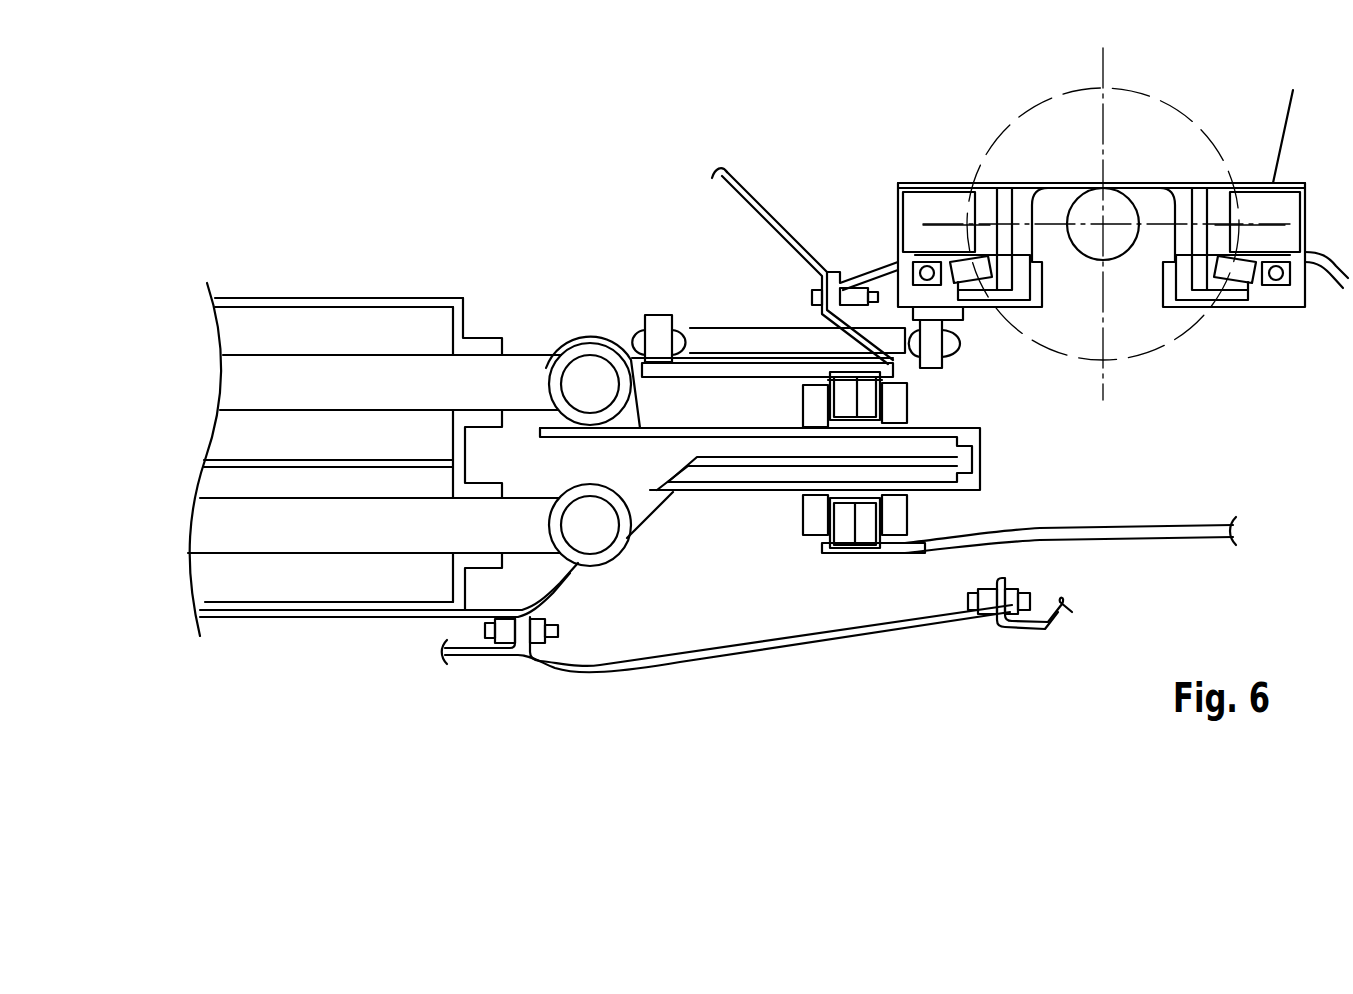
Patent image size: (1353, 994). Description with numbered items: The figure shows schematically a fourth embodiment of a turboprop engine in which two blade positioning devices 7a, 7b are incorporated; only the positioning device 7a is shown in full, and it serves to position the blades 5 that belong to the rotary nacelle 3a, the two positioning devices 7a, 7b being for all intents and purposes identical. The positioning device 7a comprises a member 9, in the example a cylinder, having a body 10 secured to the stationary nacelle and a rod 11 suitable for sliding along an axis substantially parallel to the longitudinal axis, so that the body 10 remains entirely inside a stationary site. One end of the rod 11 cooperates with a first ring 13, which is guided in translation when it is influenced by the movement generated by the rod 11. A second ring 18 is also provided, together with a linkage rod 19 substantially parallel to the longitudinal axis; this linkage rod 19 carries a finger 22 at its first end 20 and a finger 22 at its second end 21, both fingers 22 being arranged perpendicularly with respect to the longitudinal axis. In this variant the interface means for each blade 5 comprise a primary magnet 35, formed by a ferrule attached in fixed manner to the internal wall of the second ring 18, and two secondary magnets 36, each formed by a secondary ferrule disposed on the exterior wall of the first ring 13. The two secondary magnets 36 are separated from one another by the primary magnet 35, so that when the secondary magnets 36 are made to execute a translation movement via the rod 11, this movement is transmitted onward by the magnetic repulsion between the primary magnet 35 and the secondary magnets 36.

The rotary nacelle 3a is at (753, 198).
The blade 5 is at (940, 183).
The blade positioning device 7a is at (220, 262).
The blade positioning device 7b is at (165, 592).
The member 9 is at (398, 278).
The body 10 is at (299, 298).
The rod 11 is at (409, 454).
The first ring 13 is at (670, 430).
The second ring 18 is at (708, 370).
The linkage rod 19 is at (762, 340).
The first end 20 is at (627, 335).
The second end 21 is at (964, 345).
The finger 22 is at (658, 318).
The primary magnet 35 is at (848, 397).
The secondary magnet 36 is at (812, 410).